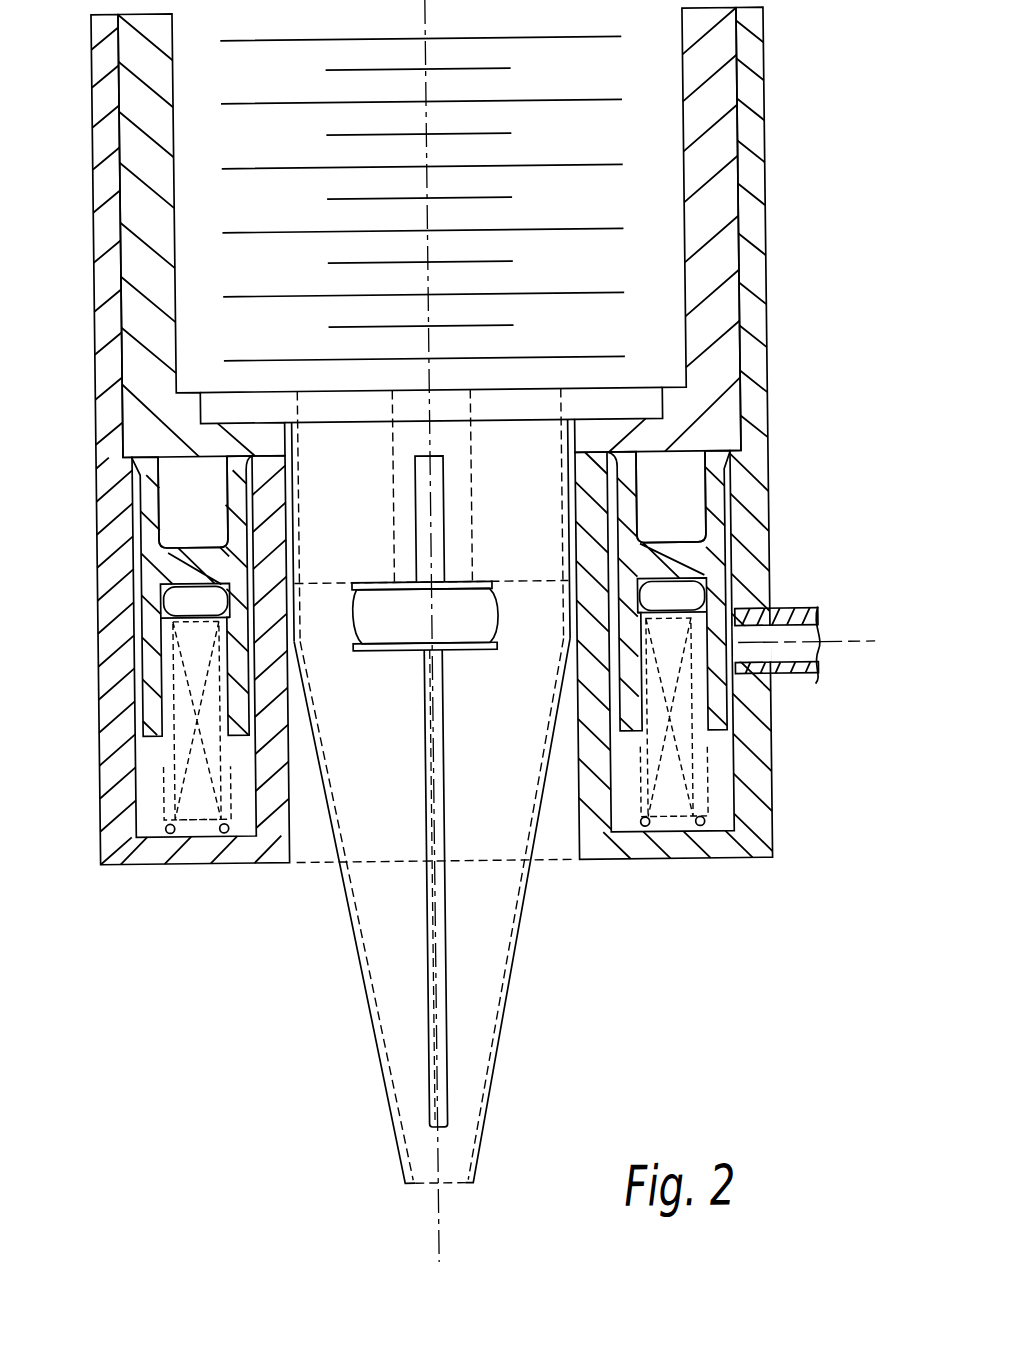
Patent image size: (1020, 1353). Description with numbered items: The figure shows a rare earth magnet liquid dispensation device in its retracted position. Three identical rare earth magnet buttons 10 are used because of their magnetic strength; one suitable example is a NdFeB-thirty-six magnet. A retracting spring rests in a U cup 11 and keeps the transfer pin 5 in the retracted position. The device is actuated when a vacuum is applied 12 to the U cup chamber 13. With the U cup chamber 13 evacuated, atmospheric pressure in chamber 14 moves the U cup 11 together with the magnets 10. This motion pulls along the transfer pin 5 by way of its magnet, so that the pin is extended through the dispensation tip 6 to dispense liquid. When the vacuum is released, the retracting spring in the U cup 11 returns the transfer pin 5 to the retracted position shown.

The transfer pin 5 is at (401, 1044).
The dispensation tip 6 is at (503, 1028).
The rare earth magnet buttons 10 is at (655, 602).
The U cup 11 is at (696, 555).
The vacuum application 12 is at (790, 594).
The U cup chamber 13 is at (722, 788).
The chamber 14 is at (188, 492).